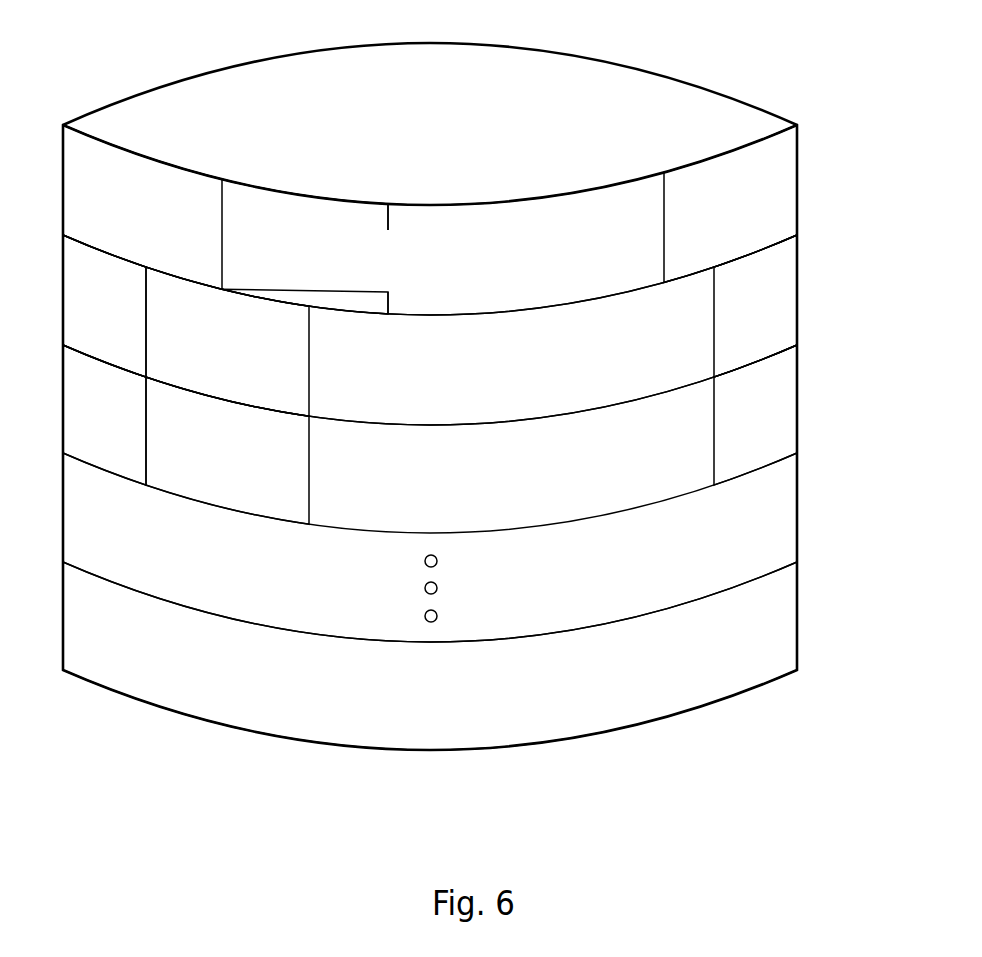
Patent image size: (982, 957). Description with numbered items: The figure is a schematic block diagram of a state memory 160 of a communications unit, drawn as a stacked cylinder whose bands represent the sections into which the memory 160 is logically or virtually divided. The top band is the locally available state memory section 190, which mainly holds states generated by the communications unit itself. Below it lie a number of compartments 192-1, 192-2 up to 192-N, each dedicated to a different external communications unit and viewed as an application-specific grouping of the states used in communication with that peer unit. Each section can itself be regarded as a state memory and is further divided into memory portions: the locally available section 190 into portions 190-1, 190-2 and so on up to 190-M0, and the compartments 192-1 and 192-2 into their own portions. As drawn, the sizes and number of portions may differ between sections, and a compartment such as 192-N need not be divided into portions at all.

The state memory 160 is at (588, 58).
The locally available state memory section 190 is at (799, 176).
The memory portion 190-1 is at (153, 178).
The memory portion 190-2 is at (290, 208).
The memory portion 190-M0 is at (728, 170).
The compartment 192-1 is at (799, 286).
The compartment 192-2 is at (799, 394).
The compartment 192-N is at (799, 609).